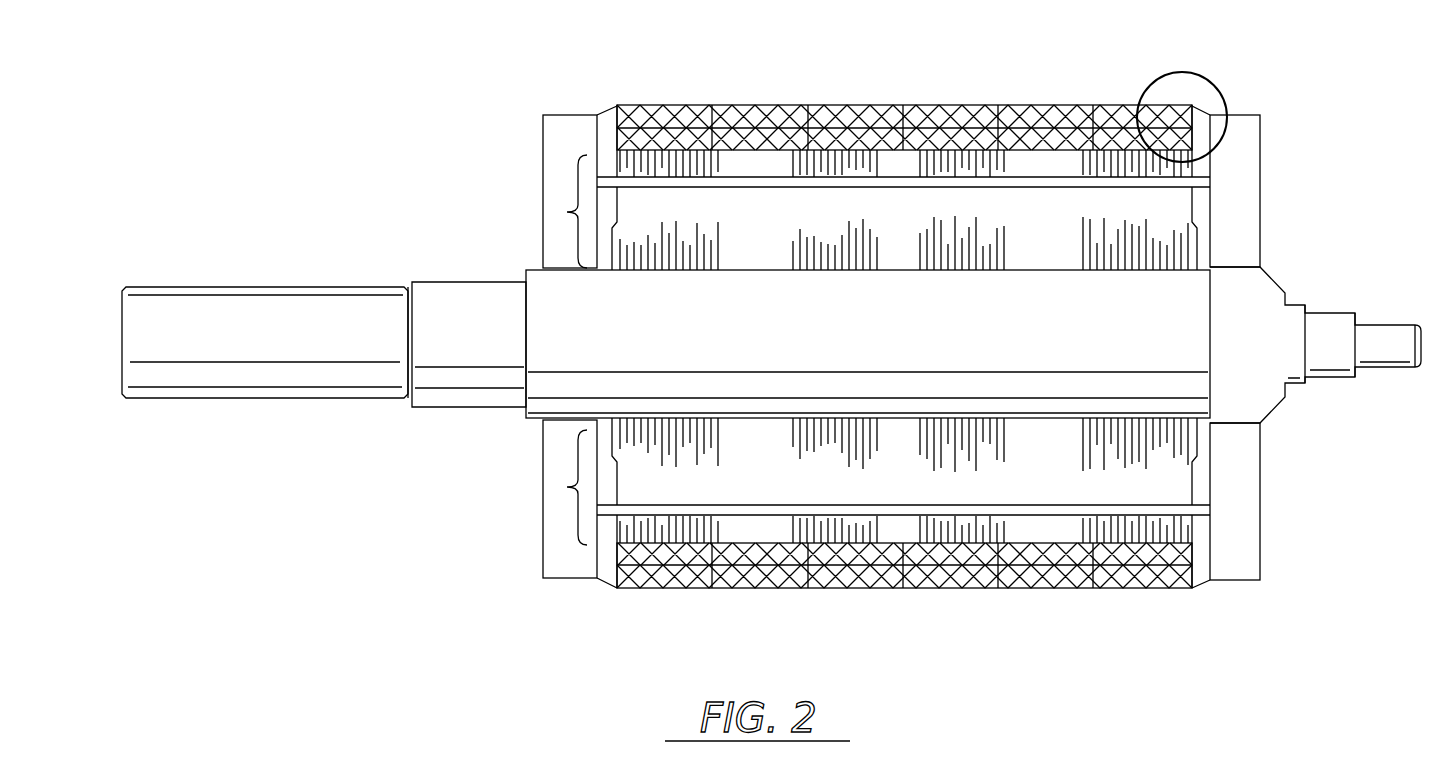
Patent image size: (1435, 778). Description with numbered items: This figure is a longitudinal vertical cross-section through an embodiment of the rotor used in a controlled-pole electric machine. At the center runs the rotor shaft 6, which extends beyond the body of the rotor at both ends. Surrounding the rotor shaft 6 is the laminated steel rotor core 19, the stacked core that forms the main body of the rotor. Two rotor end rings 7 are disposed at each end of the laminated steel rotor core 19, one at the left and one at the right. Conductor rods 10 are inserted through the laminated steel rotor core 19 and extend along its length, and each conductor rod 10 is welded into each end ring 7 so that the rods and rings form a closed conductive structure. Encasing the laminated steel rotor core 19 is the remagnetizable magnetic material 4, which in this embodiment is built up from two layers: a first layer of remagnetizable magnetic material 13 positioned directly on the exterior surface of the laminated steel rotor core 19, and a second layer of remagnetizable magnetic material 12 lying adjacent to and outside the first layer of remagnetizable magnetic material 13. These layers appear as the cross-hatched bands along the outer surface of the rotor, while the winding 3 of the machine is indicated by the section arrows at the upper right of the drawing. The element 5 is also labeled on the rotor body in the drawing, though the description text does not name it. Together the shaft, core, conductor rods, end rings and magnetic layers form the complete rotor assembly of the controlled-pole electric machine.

The winding 3 is at (1150, 90).
The remagnetizable magnetic material 4 is at (1188, 135).
The winding 5 is at (1185, 237).
The rotor shaft 6 is at (565, 385).
The rotor end ring 7 is at (608, 125).
The conductor rod 10 is at (1208, 183).
The second layer of remagnetizable magnetic material 12 is at (774, 112).
The first layer of remagnetizable magnetic material 13 is at (843, 140).
The laminated steel rotor core 19 is at (565, 214).